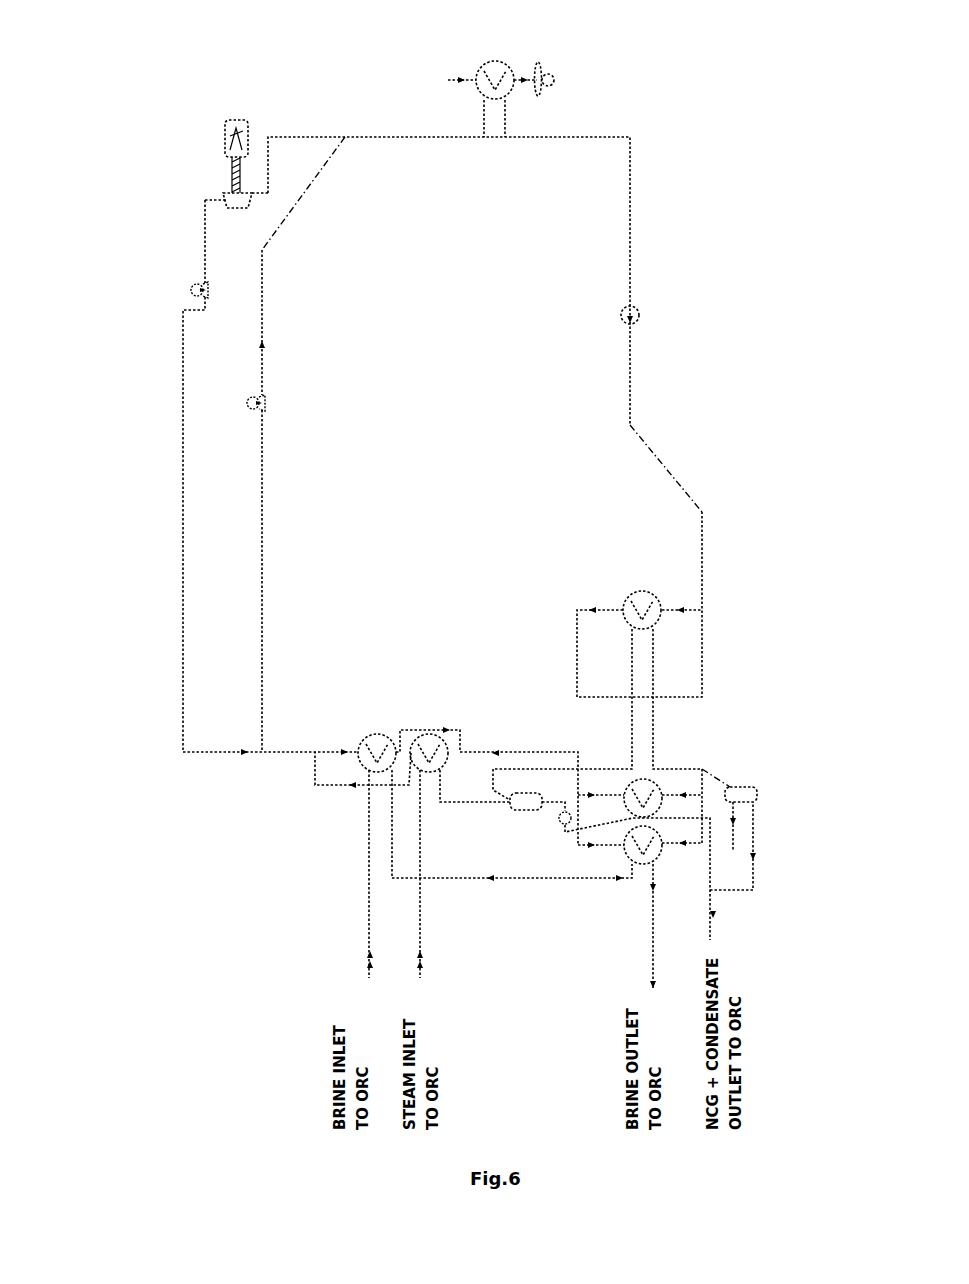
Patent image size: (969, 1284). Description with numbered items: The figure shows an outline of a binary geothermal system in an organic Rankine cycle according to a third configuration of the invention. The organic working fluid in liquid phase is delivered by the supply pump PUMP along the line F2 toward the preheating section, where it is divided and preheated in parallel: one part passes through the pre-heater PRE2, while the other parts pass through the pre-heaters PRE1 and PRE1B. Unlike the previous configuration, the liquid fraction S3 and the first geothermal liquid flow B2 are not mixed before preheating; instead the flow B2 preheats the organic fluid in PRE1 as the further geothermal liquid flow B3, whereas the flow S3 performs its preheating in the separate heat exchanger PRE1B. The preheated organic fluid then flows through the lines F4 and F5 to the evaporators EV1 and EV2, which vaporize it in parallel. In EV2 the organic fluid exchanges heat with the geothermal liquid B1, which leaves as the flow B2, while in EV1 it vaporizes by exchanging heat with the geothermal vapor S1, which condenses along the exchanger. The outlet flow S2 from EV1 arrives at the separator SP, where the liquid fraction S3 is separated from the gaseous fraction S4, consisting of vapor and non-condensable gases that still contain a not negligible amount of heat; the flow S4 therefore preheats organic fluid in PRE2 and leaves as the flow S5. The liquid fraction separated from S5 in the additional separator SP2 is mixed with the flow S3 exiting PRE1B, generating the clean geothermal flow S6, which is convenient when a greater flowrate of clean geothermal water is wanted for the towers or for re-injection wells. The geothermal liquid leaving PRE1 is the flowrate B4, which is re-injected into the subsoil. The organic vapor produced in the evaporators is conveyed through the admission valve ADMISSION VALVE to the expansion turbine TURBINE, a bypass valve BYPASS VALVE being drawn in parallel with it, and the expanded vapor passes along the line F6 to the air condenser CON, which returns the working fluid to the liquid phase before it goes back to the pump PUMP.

The expansion turbine TURBINE is at (224, 196).
The admission valve ADMISSION VALVE is at (192, 290).
The bypass valve BYPASS VALVE is at (247, 402).
The working fluid line F6 is at (315, 137).
The condenser CON is at (503, 60).
The supply pump PUMP is at (637, 310).
The working fluid line F2 is at (702, 512).
The pre-heater PRE2 is at (657, 598).
The evaporator EV2 is at (378, 735).
The evaporator EV1 is at (432, 735).
The working fluid line F5 is at (300, 751).
The working fluid line F4 is at (540, 751).
The separator gaseous flow S4 is at (610, 760).
The geothermal flow exiting PRE2 S5 is at (655, 731).
The pre-heater PRE1B is at (657, 786).
The additional separator SP2 is at (757, 795).
The outlet flow from EV1 S2 is at (440, 801).
The liquid fraction S3 is at (563, 832).
The separator SP is at (510, 809).
The pre-heater PRE1 is at (657, 853).
The geothermal vapor S1 is at (418, 895).
The geothermal liquid flow B1 is at (370, 920).
The first geothermal liquid flow B2 is at (453, 880).
The further geothermal liquid flow B3 is at (524, 880).
The geothermal re-injection flowrate B4 is at (653, 922).
The geothermal flow S6 is at (713, 934).